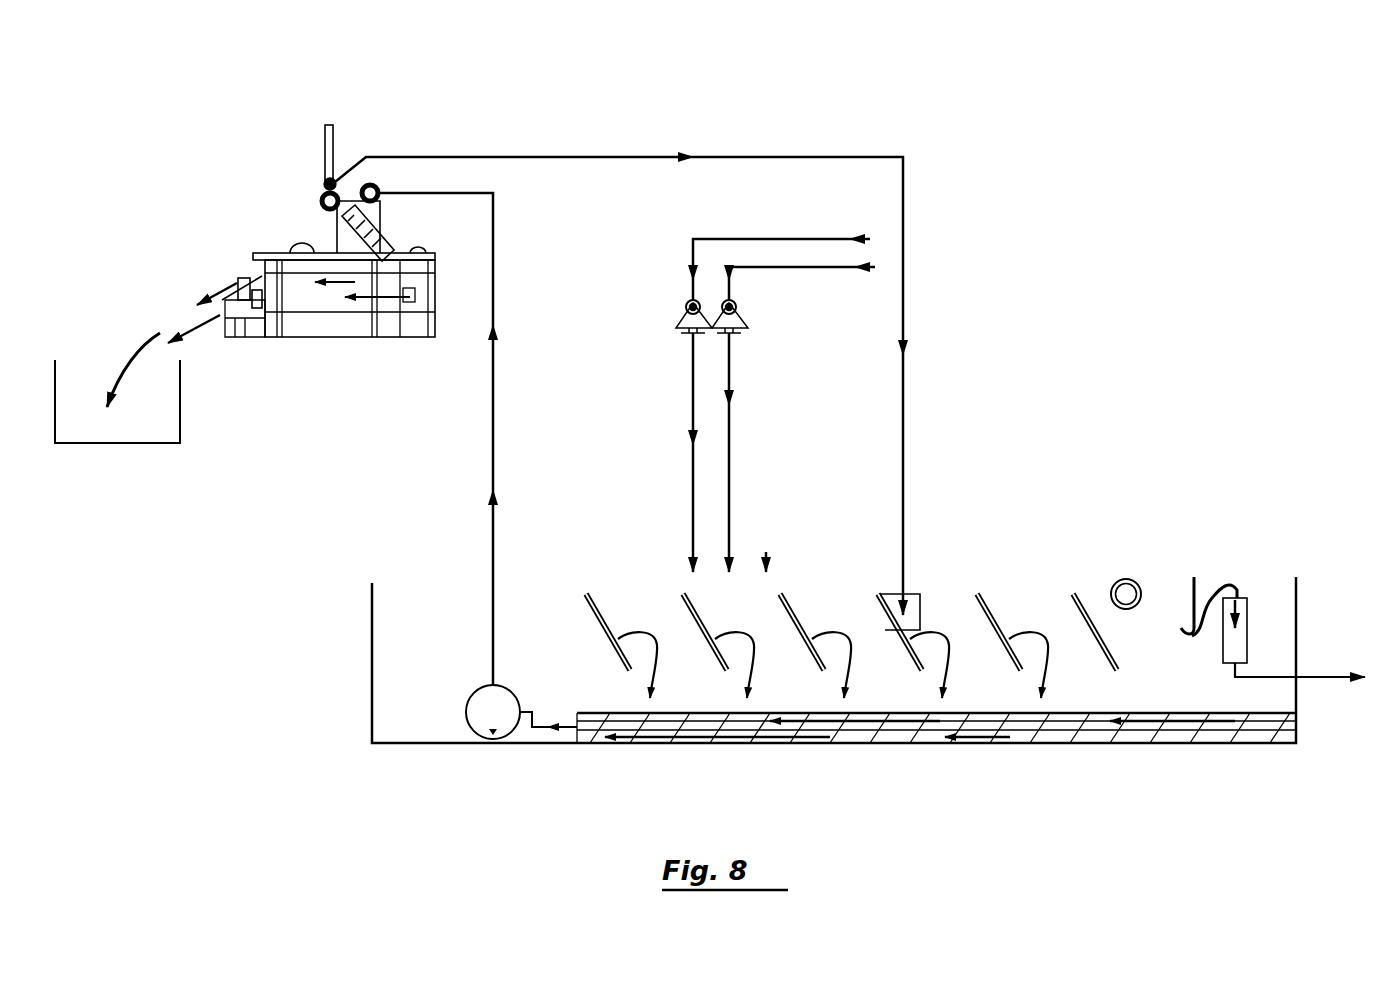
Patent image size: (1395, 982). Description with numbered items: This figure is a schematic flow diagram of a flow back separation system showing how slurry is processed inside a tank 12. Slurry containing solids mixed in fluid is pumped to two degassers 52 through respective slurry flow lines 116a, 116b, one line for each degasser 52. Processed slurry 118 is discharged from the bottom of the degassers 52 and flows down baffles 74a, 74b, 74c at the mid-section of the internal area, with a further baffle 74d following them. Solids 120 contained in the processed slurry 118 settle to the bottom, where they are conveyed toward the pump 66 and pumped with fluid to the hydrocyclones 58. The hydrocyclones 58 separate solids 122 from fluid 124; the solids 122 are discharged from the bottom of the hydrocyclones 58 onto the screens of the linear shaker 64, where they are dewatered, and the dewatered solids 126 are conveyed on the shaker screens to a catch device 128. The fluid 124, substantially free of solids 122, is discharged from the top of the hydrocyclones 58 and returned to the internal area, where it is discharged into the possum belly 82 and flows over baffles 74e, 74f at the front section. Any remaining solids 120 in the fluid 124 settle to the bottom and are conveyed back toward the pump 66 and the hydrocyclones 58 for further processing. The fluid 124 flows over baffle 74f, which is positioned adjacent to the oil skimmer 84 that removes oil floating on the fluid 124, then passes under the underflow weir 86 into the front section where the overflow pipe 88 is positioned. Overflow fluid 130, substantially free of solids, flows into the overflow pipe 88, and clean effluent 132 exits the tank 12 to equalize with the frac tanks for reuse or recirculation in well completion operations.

The tank 12 is at (372, 657).
The degassers 52 is at (689, 302).
The hydrocyclones 58 is at (382, 233).
The linear shaker 64 is at (222, 262).
The pump 66 is at (485, 722).
The baffle 74a is at (590, 600).
The baffle 74b is at (688, 607).
The baffle 74c is at (787, 598).
The baffle 74d is at (880, 604).
The baffle 74e is at (992, 616).
The baffle 74f is at (1080, 600).
The possum belly 82 is at (908, 600).
The oil skimmer 84 is at (1128, 610).
The underflow weir 86 is at (1190, 590).
The overflow pipe 88 is at (1247, 615).
The slurry flow line 116a is at (781, 239).
The slurry flow line 116b is at (803, 268).
The processed slurry 118 is at (693, 435).
The solids 120 is at (734, 745).
The solids 122 is at (382, 315).
The fluid 124 is at (647, 157).
The dewatered solids 126 is at (150, 333).
The catch device 128 is at (108, 445).
The overflow fluid 130 is at (1228, 583).
The clean effluent 132 is at (1325, 678).